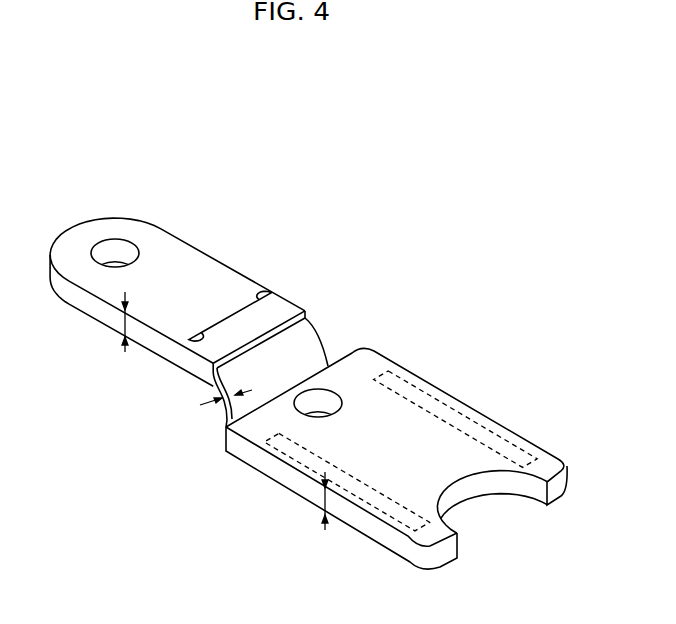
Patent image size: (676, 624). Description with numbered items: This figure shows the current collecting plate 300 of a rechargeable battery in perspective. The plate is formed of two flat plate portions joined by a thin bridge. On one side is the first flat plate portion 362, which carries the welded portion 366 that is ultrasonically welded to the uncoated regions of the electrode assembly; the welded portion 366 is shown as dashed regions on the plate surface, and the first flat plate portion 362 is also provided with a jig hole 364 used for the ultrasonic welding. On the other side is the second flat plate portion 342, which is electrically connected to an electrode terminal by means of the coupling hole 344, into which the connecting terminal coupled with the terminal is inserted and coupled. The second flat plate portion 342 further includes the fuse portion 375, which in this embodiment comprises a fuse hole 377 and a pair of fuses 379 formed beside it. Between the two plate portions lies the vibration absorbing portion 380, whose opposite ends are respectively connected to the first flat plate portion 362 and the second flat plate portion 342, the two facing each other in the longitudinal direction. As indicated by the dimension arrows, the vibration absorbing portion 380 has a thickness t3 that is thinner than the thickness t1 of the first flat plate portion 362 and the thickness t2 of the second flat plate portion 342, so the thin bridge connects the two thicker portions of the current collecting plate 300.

The current collecting plate 300 is at (377, 142).
The second flat plate portion 342 is at (182, 253).
The coupling hole 344 is at (114, 244).
The first flat plate portion 362 is at (470, 403).
The jig hole 364 is at (338, 389).
The welded portion 366 is at (503, 440).
The fuse portion 375 is at (302, 223).
The fuse hole 377 is at (243, 308).
The fuse 379 is at (271, 296).
The vibration absorbing portion 380 is at (314, 327).
The thickness of the first flat plate portion t1 is at (324, 500).
The thickness of the second flat plate portion t2 is at (122, 325).
The thickness of the vibration absorbing portion t3 is at (222, 408).